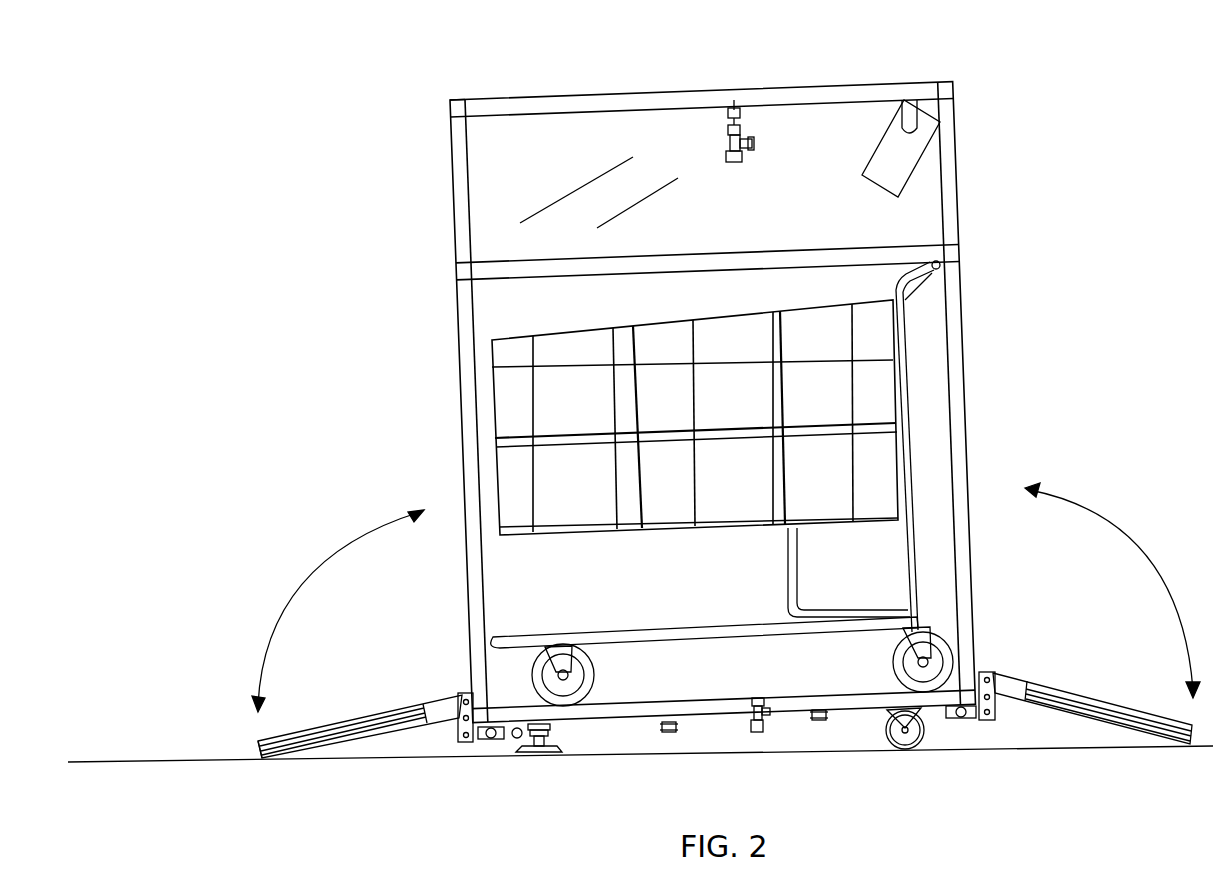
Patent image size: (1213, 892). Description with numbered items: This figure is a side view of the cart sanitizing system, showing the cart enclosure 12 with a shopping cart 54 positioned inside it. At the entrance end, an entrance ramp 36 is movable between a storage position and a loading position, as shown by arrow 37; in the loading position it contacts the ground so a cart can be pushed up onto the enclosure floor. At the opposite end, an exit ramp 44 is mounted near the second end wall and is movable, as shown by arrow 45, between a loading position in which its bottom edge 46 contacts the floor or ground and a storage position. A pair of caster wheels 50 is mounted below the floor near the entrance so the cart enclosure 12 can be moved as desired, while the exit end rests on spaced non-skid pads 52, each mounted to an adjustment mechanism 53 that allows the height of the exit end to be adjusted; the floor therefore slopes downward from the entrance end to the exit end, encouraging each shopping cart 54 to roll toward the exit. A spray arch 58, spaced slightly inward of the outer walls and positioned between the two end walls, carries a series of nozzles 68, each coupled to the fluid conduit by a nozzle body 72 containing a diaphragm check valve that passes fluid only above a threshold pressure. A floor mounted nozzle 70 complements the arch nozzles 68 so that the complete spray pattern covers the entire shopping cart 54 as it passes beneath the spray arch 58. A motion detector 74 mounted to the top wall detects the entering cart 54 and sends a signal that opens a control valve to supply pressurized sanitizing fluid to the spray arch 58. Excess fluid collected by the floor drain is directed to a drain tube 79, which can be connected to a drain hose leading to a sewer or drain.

The cart enclosure 12 is at (602, 72).
The entrance ramp 36 is at (1047, 692).
The arrow 37 is at (1147, 557).
The exit ramp 44 is at (325, 718).
The arrow 45 is at (307, 580).
The bottom edge 46 is at (272, 760).
The caster wheels 50 is at (887, 748).
The non-skid pads 52 is at (532, 752).
The adjustment mechanism 53 is at (553, 737).
The shopping cart 54 is at (567, 345).
The spray arch 58 is at (735, 106).
The nozzles 68 is at (731, 163).
The floor mounted nozzle 70 is at (771, 700).
The nozzle body 72 is at (746, 140).
The motion detector 74 is at (918, 158).
The drain tube 79 is at (512, 740).